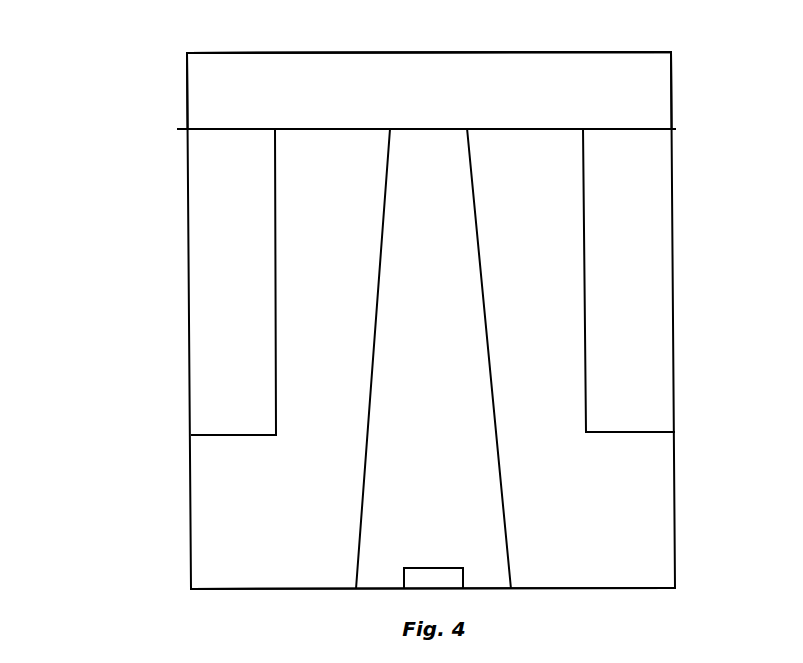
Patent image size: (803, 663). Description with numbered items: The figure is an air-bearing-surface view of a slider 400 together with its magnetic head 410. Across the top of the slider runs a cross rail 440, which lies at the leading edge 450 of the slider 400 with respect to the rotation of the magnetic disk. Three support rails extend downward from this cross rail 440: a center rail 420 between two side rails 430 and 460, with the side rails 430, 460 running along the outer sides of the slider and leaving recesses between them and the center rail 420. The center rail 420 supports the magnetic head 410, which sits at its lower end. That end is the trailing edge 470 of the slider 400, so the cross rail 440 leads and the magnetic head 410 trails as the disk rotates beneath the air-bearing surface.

The slider 400 is at (65, 542).
The magnetic head 410 is at (423, 578).
The center rail 420 is at (402, 425).
The side rail 430 is at (226, 254).
The cross rail 440 is at (226, 83).
The leading edge 450 is at (252, 53).
The side rail 460 is at (653, 270).
The trailing edge 470 is at (588, 588).